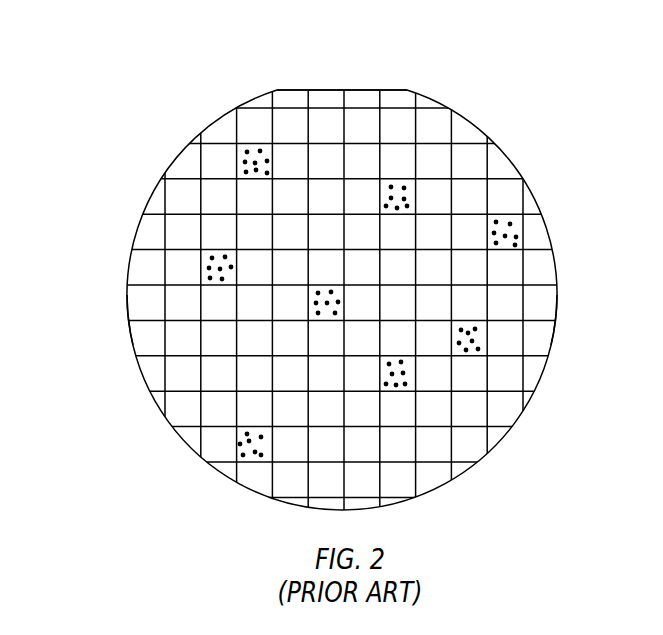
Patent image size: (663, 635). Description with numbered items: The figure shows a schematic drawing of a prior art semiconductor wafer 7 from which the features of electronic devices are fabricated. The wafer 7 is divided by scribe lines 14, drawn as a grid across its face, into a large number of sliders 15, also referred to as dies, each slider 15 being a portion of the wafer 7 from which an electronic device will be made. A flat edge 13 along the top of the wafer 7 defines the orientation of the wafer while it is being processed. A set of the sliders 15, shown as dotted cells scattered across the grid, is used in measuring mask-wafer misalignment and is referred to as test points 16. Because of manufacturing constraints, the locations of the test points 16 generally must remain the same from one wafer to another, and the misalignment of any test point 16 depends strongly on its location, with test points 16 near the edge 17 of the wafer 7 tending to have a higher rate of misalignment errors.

The semiconductor wafer 7 is at (490, 108).
The flat edge 13 is at (317, 90).
The scribe lines 14 is at (153, 318).
The slider 15 is at (213, 200).
The test points 16 is at (405, 190).
The edge 17 is at (557, 310).